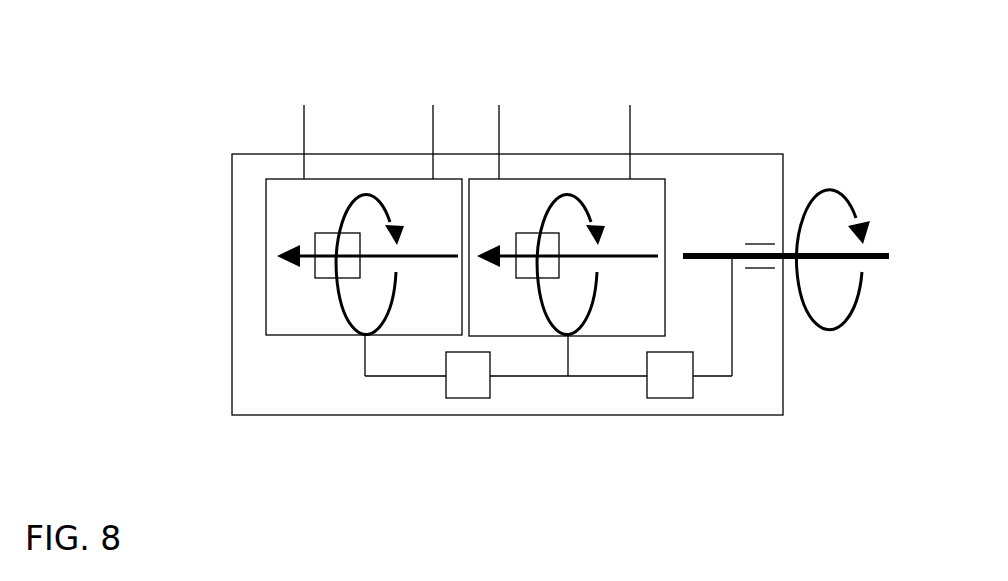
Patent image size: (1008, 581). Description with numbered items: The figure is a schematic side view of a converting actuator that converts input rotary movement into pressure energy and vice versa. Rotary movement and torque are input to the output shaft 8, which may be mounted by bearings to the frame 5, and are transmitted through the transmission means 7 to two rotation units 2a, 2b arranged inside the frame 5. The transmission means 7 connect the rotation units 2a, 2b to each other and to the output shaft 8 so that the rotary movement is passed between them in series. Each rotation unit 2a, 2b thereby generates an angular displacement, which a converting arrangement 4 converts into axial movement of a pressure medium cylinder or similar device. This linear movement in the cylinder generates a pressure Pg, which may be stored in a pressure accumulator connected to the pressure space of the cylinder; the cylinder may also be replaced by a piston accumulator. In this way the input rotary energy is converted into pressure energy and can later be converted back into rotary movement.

The rotation unit 2a is at (283, 175).
The rotation unit 2b is at (650, 178).
The converting arrangement 4 is at (330, 280).
The frame 5 is at (745, 153).
The transmission means 7 is at (468, 385).
The output shaft 8 is at (700, 250).
The generated pressure Pg is at (300, 130).